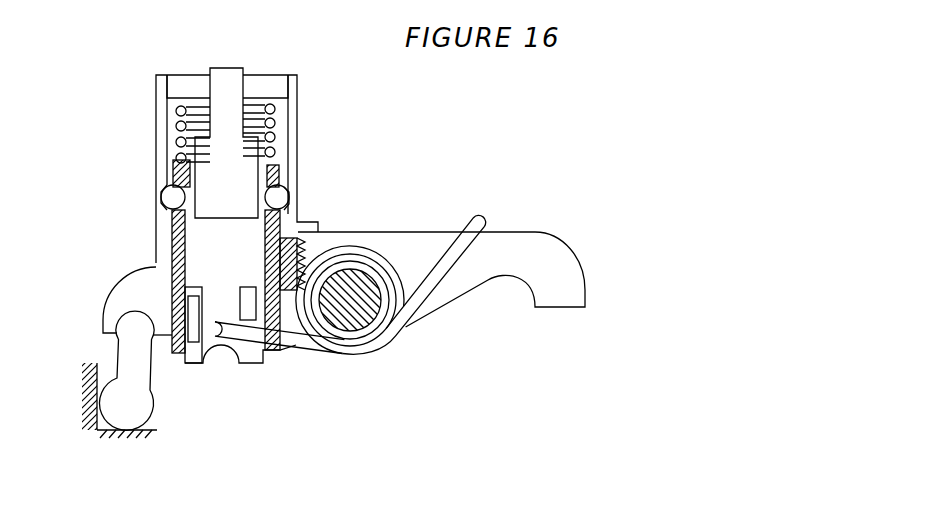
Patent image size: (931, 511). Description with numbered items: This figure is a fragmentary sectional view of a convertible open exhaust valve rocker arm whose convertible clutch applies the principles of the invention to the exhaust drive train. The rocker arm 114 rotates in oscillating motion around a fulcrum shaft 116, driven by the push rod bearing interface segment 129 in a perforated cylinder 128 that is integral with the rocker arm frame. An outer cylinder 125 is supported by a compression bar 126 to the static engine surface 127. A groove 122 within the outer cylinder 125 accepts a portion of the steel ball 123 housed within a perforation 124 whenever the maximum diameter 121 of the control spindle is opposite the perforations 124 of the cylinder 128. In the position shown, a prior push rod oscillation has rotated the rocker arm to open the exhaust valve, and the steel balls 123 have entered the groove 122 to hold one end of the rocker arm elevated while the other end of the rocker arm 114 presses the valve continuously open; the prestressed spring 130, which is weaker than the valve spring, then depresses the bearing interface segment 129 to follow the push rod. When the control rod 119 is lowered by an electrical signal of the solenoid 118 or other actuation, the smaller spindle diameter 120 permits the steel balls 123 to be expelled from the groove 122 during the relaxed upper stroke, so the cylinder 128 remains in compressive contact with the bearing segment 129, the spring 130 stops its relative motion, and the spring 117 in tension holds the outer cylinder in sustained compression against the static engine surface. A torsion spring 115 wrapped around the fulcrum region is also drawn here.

The rocker arm 114 is at (535, 233).
The torsion spring 115 is at (476, 218).
The fulcrum shaft 116 is at (365, 277).
The spring 117 is at (277, 133).
The solenoid 118 is at (273, 80).
The control rod 119 is at (232, 69).
The smaller spindle diameter 120 is at (176, 133).
The maximum diameter of the control spindle 121 is at (173, 180).
The groove 122 is at (160, 190).
The steel ball 123 is at (160, 198).
The perforation 124 is at (173, 213).
The outer cylinder 125 is at (103, 315).
The compression bar 126 is at (116, 352).
The static engine surface 127 is at (128, 432).
The cylinder 128 is at (177, 353).
The push rod bearing interface segment 129 is at (252, 363).
The prestressed spring 130 is at (292, 337).